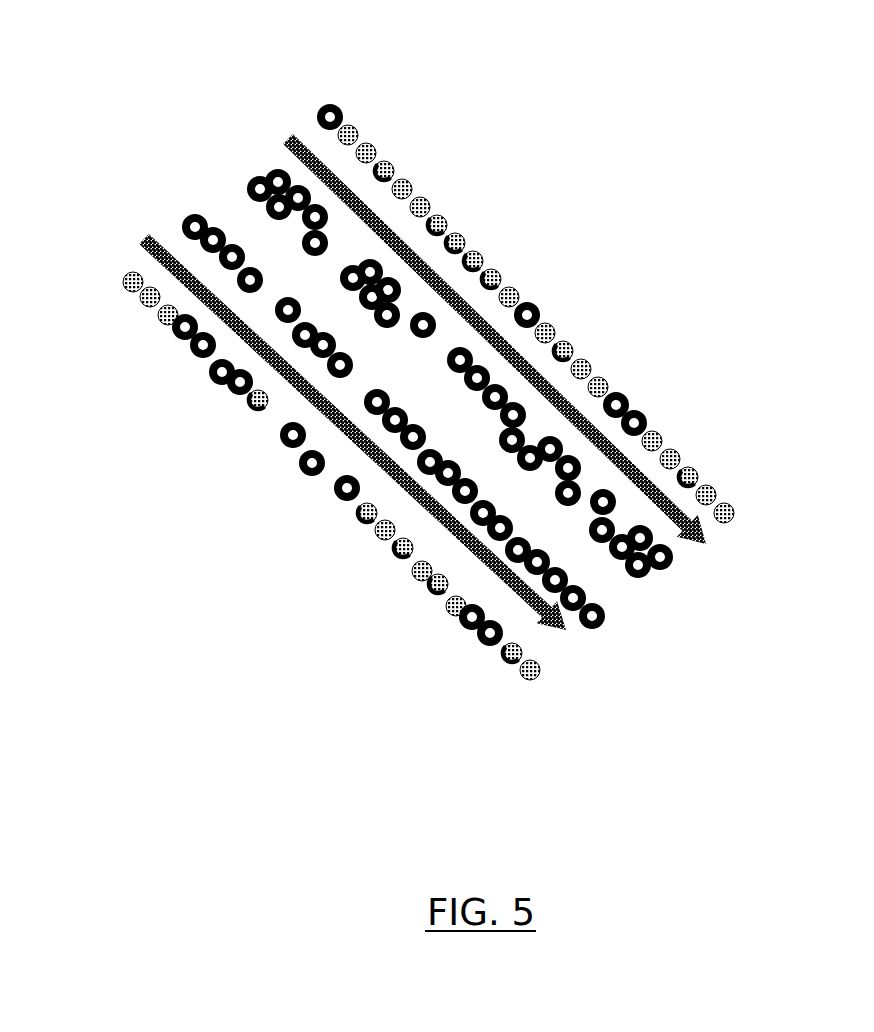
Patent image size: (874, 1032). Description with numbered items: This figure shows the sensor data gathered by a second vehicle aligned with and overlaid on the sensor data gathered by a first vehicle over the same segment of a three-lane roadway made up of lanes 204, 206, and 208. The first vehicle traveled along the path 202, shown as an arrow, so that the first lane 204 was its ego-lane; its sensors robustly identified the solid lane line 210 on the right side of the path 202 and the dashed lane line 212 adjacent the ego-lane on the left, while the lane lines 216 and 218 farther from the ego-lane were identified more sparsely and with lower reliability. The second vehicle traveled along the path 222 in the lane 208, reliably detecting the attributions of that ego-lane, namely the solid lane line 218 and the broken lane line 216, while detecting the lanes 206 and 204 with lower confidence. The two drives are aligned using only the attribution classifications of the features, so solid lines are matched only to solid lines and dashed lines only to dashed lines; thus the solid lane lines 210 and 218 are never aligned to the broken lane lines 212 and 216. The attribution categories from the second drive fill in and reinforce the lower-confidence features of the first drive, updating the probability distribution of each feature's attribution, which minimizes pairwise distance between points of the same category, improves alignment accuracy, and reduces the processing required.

The path 202 is at (148, 233).
The first lane 204 is at (587, 652).
The lane 206 is at (648, 598).
The lane 208 is at (707, 547).
The solid lane line 210 is at (132, 275).
The dashed lane line 212 is at (200, 212).
The broken lane line 216 is at (260, 177).
The solid lane line 218 is at (348, 110).
The path 222 is at (287, 133).